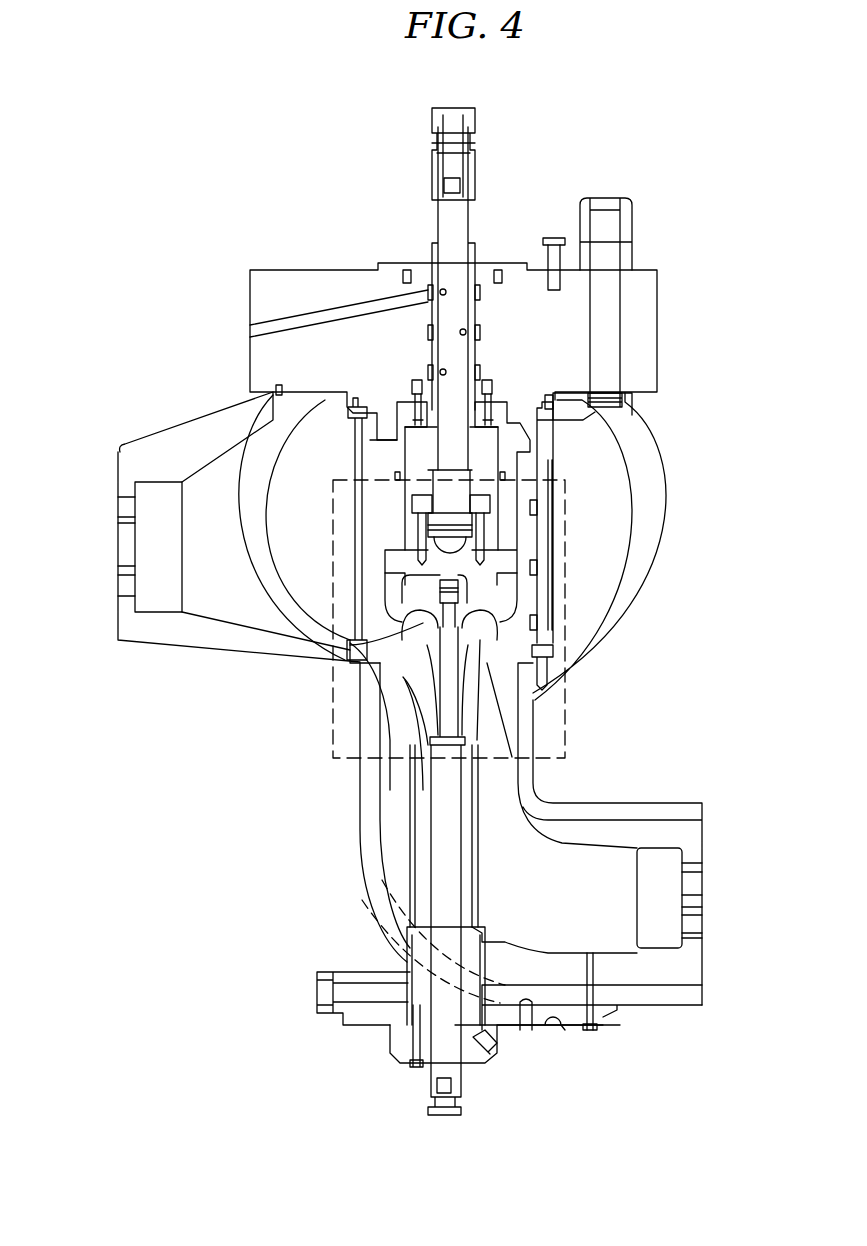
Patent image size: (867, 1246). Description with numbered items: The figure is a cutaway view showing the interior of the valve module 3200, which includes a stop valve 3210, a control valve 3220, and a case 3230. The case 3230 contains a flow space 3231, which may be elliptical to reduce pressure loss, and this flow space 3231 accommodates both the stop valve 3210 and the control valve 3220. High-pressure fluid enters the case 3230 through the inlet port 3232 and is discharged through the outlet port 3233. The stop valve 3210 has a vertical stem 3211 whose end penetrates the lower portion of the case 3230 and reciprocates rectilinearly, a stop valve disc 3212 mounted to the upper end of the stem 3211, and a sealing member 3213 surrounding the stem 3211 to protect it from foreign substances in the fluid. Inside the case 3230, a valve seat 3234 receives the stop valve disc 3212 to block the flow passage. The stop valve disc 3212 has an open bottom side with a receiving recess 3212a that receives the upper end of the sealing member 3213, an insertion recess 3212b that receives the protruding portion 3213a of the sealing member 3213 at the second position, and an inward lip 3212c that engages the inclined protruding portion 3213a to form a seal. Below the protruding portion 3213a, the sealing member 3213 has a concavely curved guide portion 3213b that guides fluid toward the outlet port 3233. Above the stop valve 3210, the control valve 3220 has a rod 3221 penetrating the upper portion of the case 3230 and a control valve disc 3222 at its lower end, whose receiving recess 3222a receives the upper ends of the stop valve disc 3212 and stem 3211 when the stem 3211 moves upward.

The valve module 3200 is at (624, 111).
The stop valve 3210 is at (483, 650).
The stem 3211 is at (448, 703).
The stop valve disc 3212 is at (482, 640).
The receiving recess 3212a is at (410, 635).
The insertion recess 3212b is at (470, 612).
The inward lip 3212c is at (553, 655).
The sealing member 3213 is at (427, 723).
The protruding portion 3213a is at (423, 647).
The guide portion 3213b is at (427, 717).
The control valve 3220 is at (523, 548).
The rod 3221 is at (453, 495).
The control valve disc 3222 is at (347, 647).
The receiving recess 3222a is at (490, 590).
The case 3230 is at (682, 806).
The flow space 3231 is at (610, 487).
The inlet port 3232 is at (120, 520).
The outlet port 3233 is at (702, 890).
The valve seat 3234 is at (385, 580).